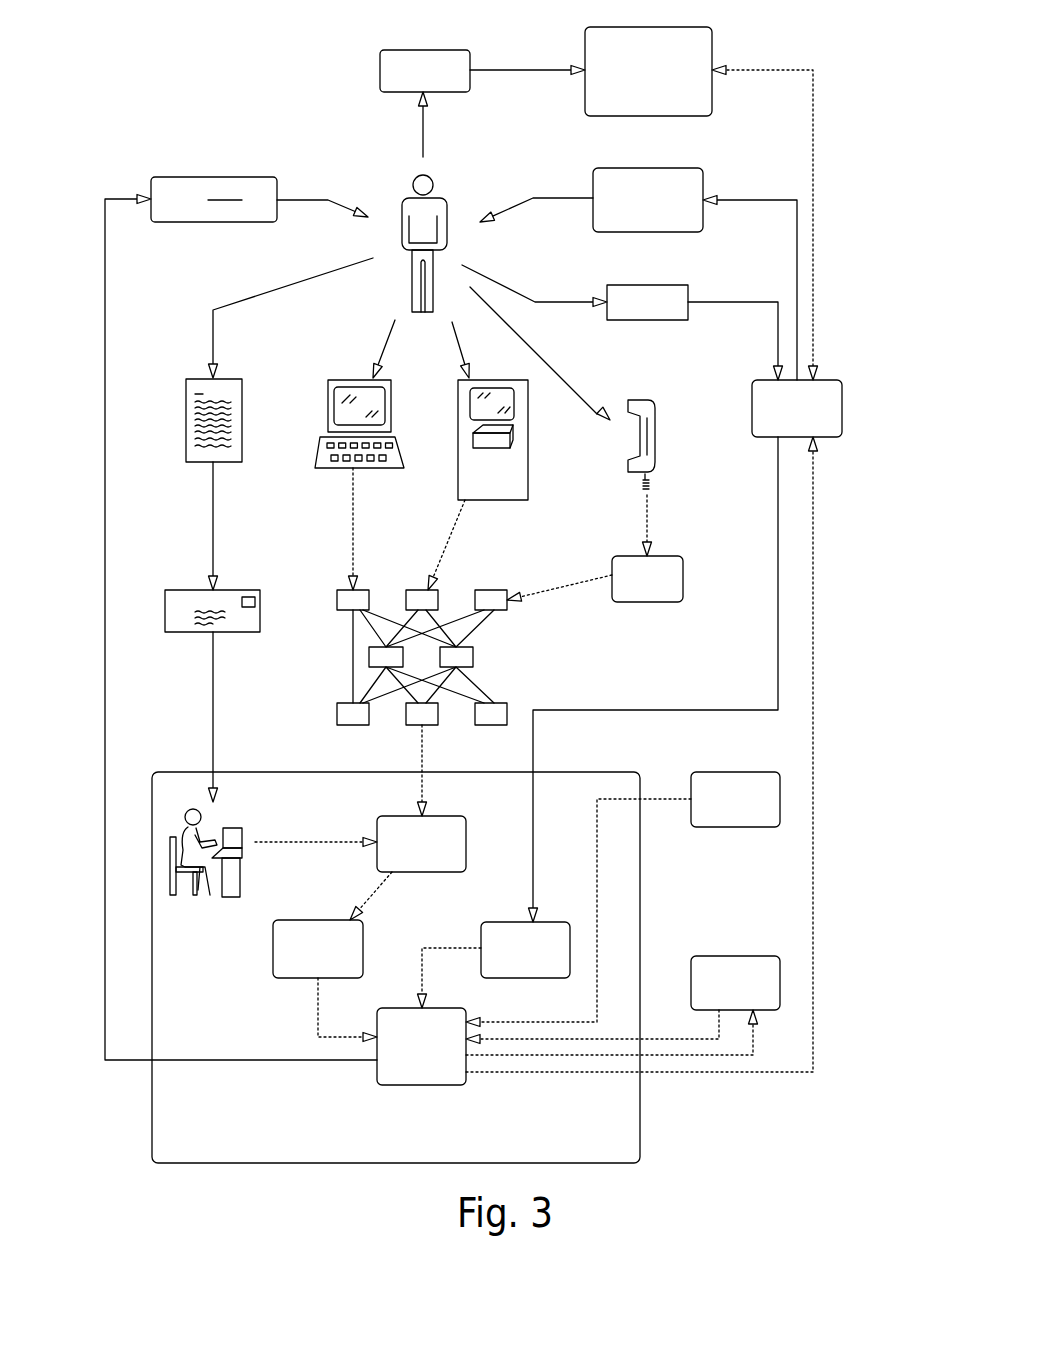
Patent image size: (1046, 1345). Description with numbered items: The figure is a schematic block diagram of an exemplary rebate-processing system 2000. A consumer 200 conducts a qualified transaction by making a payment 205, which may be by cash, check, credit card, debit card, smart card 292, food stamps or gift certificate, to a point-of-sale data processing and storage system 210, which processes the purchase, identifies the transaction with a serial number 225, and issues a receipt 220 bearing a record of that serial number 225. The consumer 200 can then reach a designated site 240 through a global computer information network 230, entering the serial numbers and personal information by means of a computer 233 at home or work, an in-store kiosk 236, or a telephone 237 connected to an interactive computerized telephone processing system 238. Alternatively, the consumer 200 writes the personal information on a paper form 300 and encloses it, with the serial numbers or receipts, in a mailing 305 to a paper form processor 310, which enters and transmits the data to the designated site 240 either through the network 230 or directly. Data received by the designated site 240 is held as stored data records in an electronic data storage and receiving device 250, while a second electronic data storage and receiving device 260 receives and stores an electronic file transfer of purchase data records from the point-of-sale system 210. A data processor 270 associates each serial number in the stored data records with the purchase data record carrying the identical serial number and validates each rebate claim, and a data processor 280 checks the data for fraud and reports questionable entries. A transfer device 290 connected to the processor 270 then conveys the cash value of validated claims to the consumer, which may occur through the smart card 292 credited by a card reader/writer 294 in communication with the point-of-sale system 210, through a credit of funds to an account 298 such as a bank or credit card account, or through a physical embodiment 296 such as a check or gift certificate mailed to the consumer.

The consumer 200 is at (403, 198).
The payment 205 is at (677, 320).
The point-of-sale data processing and storage system 210 is at (842, 405).
The receipt 220 is at (610, 168).
The serial number 225 is at (695, 170).
The global computer information network 230 is at (532, 648).
The computer 233 is at (330, 377).
The in-store kiosk 236 is at (528, 443).
The telephone 237 is at (653, 448).
The interactive computerized telephone processing system 238 is at (665, 590).
The designated site 240 is at (440, 858).
The electronic data storage and receiving device 250 is at (337, 963).
The electronic data storage and receiving device 260 is at (544, 963).
The data processor 270 is at (440, 1060).
The data processor for checking for fraud 280 is at (754, 995).
The transfer device 290 is at (223, 1071).
The smart card 292 is at (380, 76).
The card reader/writer 294 is at (712, 40).
The physical embodiment 296 is at (180, 177).
The account 298 is at (754, 812).
The paper form 300 is at (186, 393).
The mailing 305 is at (165, 600).
The paper form processor 310 is at (213, 921).
The system 2000 is at (684, 1135).